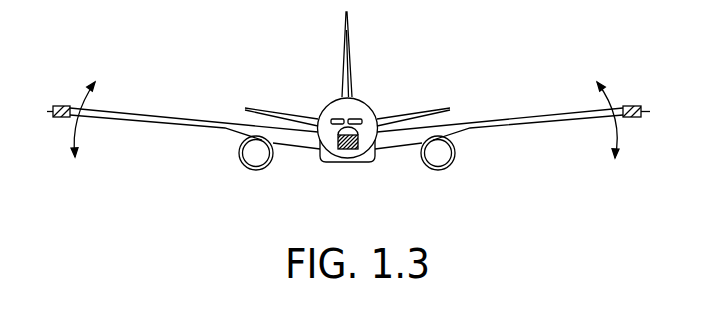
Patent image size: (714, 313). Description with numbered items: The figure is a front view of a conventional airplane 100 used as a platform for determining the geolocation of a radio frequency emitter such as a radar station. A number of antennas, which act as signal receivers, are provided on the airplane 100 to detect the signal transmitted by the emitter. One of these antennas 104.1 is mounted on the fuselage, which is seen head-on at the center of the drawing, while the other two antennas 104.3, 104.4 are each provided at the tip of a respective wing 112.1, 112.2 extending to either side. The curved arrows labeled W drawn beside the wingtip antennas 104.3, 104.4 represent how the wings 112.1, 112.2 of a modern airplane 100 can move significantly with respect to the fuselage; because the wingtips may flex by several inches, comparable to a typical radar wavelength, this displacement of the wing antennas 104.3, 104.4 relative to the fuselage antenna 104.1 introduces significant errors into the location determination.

The airplane 100 is at (347, 104).
The antenna 104.1 is at (348, 149).
The antenna 104.3 is at (633, 105).
The antenna 104.4 is at (62, 105).
The wing 112.1 is at (530, 126).
The wing 112.2 is at (158, 124).